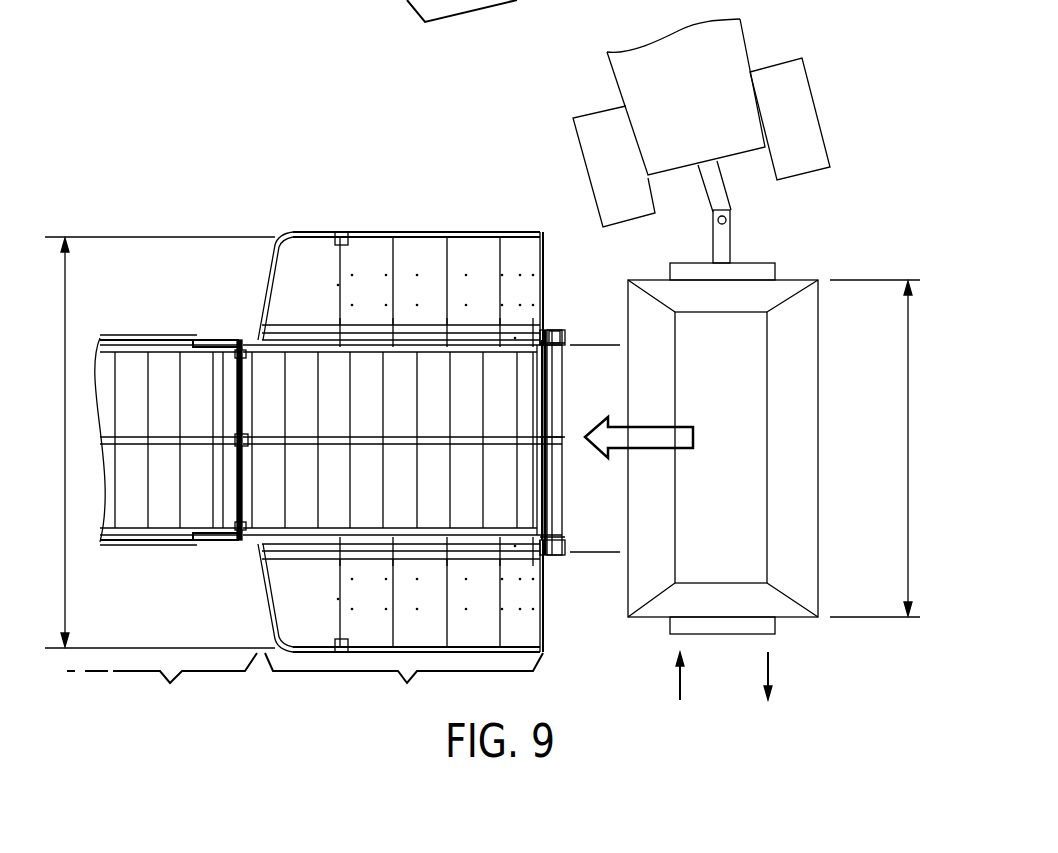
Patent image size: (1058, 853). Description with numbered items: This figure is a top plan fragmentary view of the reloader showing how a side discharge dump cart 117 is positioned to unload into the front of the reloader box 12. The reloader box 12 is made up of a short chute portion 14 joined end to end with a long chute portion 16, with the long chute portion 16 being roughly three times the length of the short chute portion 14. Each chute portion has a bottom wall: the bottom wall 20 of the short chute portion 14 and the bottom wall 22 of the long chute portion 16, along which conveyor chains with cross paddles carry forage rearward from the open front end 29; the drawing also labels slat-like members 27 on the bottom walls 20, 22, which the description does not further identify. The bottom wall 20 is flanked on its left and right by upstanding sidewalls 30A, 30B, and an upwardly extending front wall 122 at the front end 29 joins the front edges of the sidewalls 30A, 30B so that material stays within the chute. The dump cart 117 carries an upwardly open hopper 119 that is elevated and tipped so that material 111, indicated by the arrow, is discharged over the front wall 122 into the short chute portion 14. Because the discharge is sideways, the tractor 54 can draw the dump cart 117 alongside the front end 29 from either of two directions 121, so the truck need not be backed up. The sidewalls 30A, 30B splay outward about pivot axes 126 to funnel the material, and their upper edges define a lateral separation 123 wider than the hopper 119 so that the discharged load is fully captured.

The reloader box 12 is at (124, 152).
The short chute portion 14 is at (404, 685).
The long chute portion 16 is at (162, 685).
The bottom wall 20 is at (385, 496).
The bottom wall 22 is at (180, 496).
The deck slats 27 is at (147, 378).
The open front end 29 is at (574, 567).
The upstanding sidewall 30A is at (445, 232).
The upstanding sidewall 30B is at (543, 650).
The tractor 54 is at (737, 62).
The material 111 is at (693, 437).
The side discharge dump cart 117 is at (813, 254).
The hopper 119 is at (797, 410).
The directions 121 is at (768, 675).
The front wall 122 is at (553, 330).
The lateral separation 123 is at (750, 311).
The pivot axes 126 is at (592, 347).